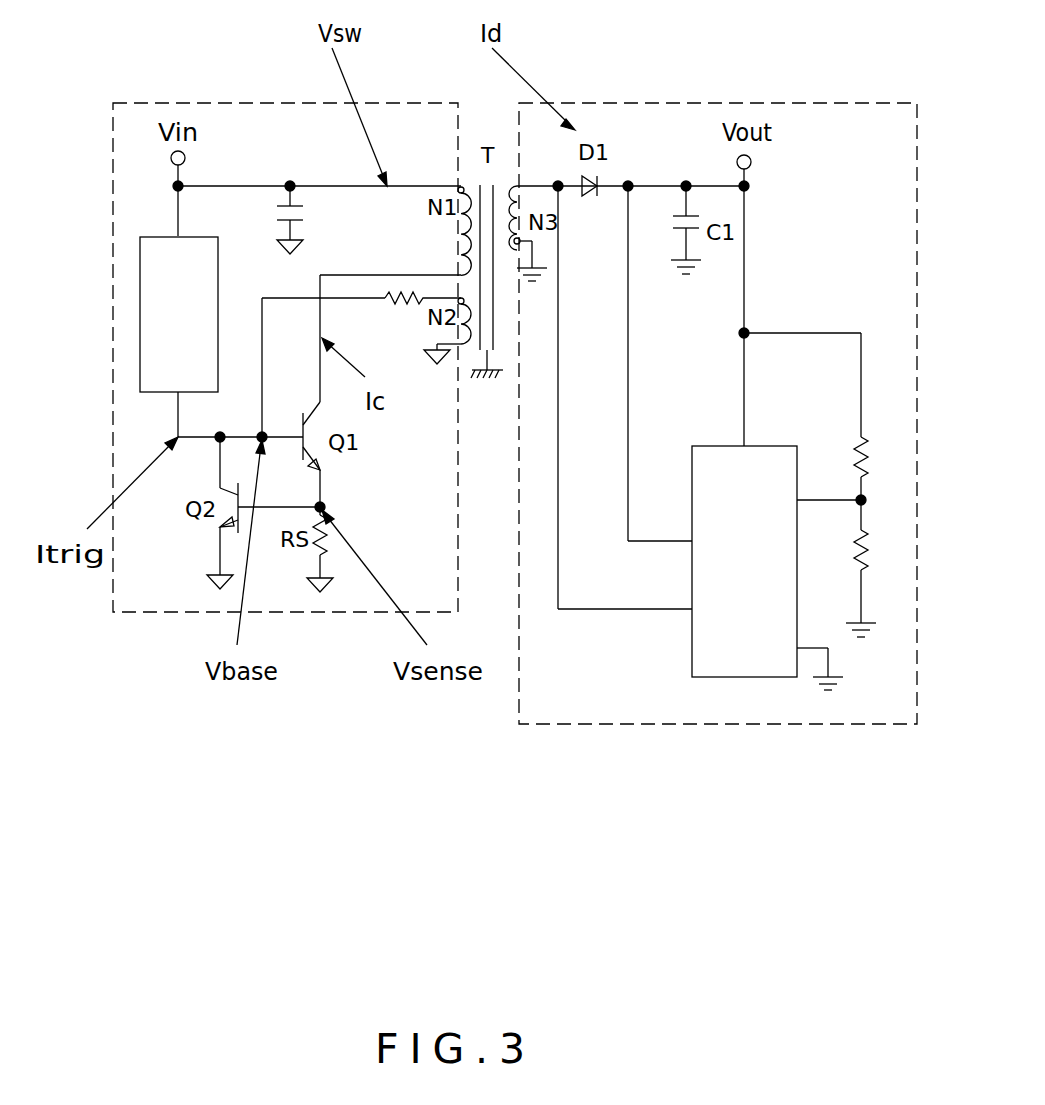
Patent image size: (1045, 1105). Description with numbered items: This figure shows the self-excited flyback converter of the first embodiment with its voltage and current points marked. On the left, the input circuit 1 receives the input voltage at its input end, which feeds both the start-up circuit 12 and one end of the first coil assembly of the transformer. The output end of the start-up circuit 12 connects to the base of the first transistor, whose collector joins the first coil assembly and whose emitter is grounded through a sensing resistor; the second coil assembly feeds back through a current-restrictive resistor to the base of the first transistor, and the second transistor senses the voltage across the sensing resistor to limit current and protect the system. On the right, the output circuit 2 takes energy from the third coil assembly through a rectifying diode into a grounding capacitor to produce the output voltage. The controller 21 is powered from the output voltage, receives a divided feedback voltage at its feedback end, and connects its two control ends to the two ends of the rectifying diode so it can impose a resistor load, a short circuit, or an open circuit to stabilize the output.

The input circuit 1 is at (285, 101).
The output circuit 2 is at (717, 100).
The start-up circuit 12 is at (140, 313).
The controller 21 is at (745, 677).